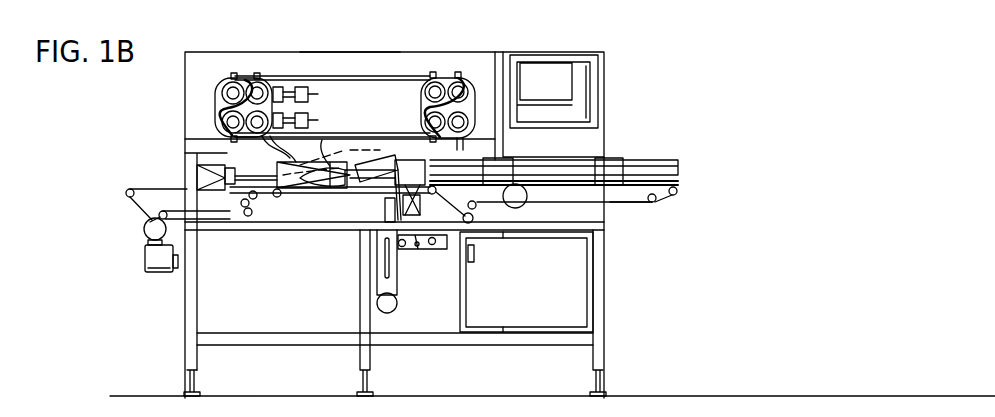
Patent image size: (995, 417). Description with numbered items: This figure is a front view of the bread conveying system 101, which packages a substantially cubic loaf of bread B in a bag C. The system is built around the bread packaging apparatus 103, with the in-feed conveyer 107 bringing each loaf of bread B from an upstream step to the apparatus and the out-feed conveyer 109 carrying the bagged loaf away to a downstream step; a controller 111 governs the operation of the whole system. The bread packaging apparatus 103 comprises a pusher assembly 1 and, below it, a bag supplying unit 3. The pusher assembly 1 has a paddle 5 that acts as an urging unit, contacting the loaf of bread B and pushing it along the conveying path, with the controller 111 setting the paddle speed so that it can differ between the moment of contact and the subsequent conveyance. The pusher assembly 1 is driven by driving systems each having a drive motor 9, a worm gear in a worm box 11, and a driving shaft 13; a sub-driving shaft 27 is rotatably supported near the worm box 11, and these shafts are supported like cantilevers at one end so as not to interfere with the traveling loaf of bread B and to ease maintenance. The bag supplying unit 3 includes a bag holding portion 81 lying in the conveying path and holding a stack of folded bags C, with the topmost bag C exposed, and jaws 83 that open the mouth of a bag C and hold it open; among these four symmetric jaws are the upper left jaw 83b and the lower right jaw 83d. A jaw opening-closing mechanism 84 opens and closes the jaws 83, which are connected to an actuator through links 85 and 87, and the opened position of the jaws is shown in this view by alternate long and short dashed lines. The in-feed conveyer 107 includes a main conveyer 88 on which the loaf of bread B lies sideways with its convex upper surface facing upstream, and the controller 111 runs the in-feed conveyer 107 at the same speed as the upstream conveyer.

The pusher assembly 1 is at (329, 68).
The bag supplying unit 3 is at (365, 152).
The paddle 5 is at (243, 205).
The drive motor 9 is at (297, 90).
The worm box 11 is at (272, 86).
The driving shaft 13 is at (247, 72).
The sub-driving shaft 27 is at (217, 80).
The bag holding portion 81 is at (283, 175).
The jaws 83 is at (330, 292).
The upper left jaw 83b is at (305, 180).
The lower right jaw 83d is at (375, 195).
The jaw opening-closing mechanism 84 is at (436, 262).
The link 85 is at (440, 192).
The link 87 is at (412, 258).
The main conveyer 88 is at (630, 202).
The bread conveying system 101 is at (600, 14).
The bread packaging apparatus 103 is at (388, 22).
The in-feed conveyer 107 is at (668, 148).
The out-feed conveyer 109 is at (149, 172).
The controller 111 is at (576, 84).
The loaf of bread B is at (398, 158).
The bag C is at (322, 140).